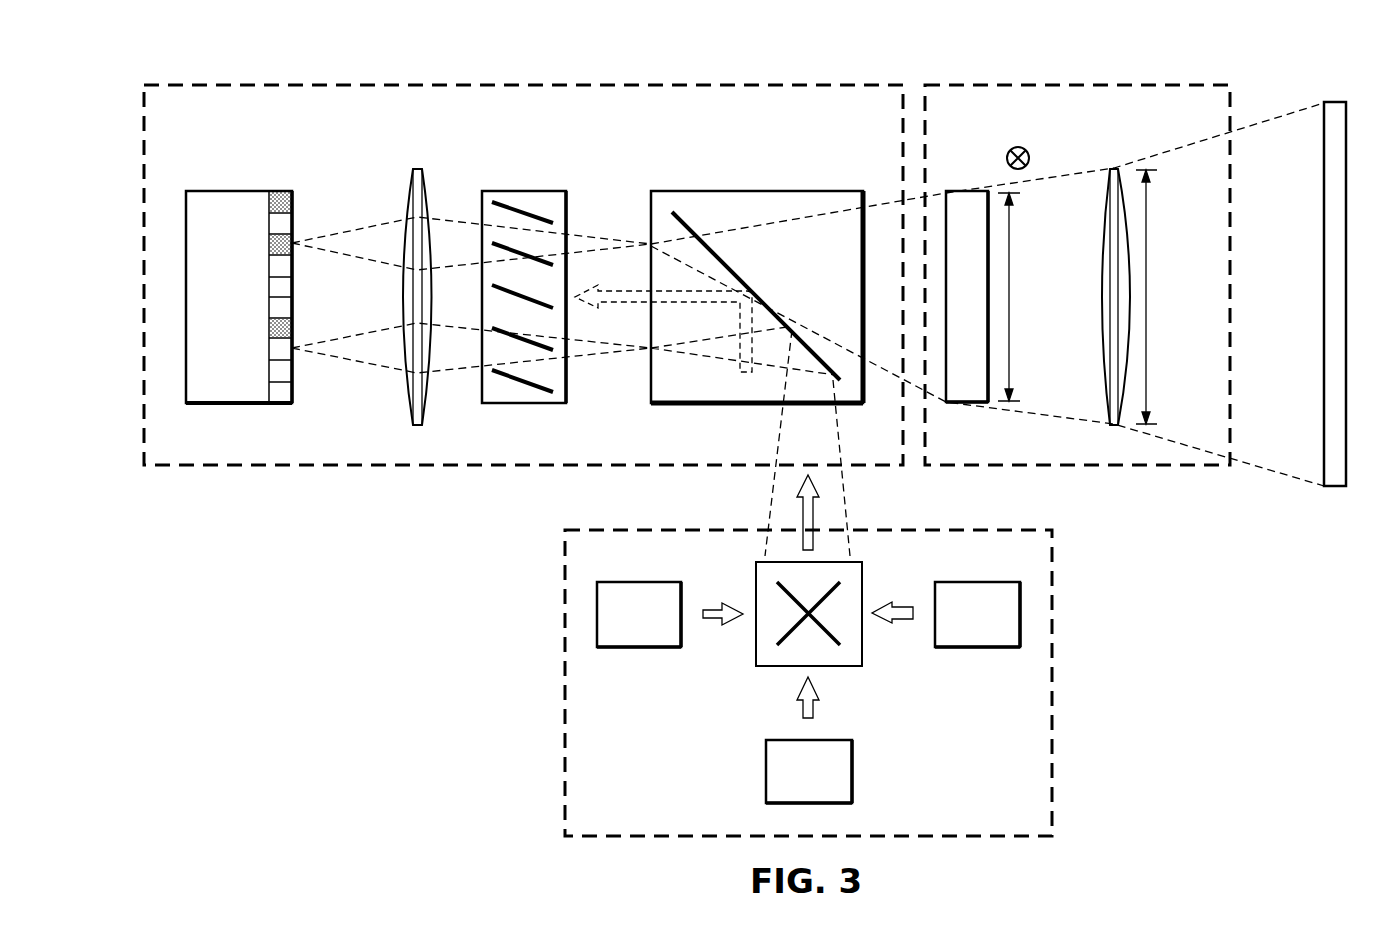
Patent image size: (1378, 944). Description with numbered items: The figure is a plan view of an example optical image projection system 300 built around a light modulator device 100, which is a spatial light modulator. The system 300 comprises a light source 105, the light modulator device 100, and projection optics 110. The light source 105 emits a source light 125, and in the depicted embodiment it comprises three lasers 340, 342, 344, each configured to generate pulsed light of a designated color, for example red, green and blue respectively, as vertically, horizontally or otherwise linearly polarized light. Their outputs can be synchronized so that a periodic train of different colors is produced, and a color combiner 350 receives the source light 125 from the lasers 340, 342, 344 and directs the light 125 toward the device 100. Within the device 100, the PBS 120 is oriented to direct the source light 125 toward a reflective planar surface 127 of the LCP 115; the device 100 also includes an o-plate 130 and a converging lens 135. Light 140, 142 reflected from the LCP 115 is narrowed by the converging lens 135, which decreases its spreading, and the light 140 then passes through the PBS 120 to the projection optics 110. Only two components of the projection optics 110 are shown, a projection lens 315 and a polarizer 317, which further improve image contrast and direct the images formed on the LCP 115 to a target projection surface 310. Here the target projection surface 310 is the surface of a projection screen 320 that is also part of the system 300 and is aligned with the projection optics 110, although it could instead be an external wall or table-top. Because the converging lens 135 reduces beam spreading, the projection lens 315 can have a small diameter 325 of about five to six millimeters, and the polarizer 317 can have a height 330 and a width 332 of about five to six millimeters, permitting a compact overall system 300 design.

The light modulator device 100 is at (522, 82).
The light source 105 is at (1053, 783).
The projection optics 110 is at (1103, 82).
The LCP 115 is at (271, 266).
The PBS 120 is at (753, 190).
The source light 125 is at (612, 290).
The reflective planar surface 127 is at (292, 288).
The o-plate 130 is at (523, 190).
The converging lens 135 is at (416, 170).
The light 140 is at (377, 236).
The light 142 is at (377, 362).
The optical image projection system 300 is at (410, 622).
The target projection surface 310 is at (1324, 297).
The projection lens 315 is at (1114, 169).
The polarizer 317 is at (966, 190).
The projection screen 320 is at (1312, 271).
The diameter 325 is at (1148, 296).
The height 330 is at (1019, 146).
The width 332 is at (1011, 296).
The laser 340 is at (639, 614).
The laser 342 is at (809, 771).
The laser 344 is at (977, 614).
The color combiner 350 is at (862, 657).